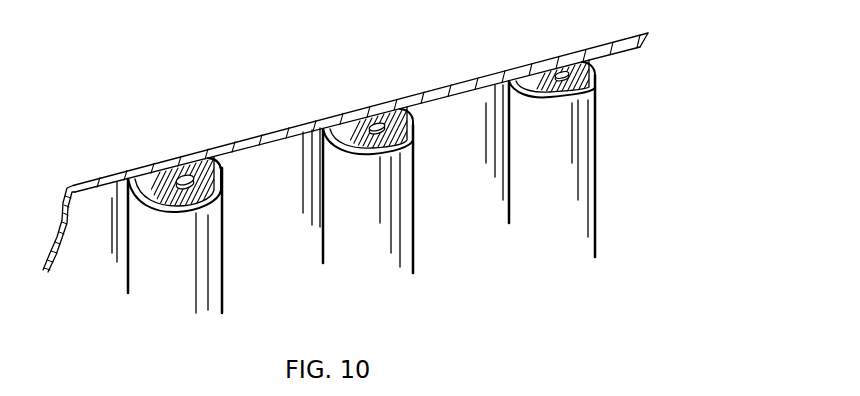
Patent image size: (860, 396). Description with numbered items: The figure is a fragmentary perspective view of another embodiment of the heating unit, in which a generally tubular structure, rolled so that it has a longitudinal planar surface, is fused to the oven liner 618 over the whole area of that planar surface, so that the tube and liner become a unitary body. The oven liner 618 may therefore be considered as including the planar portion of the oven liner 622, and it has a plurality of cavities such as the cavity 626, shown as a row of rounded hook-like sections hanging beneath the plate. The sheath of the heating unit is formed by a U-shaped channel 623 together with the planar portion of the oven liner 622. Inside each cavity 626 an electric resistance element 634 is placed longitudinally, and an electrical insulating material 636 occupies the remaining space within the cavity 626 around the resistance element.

The oven liner 618 is at (92, 222).
The planar portion of the oven liner 622 is at (177, 202).
The U-shaped channel 623 is at (202, 249).
The cavity 626 is at (153, 178).
The electric resistance element 634 is at (188, 173).
The electrical insulating material 636 is at (216, 187).